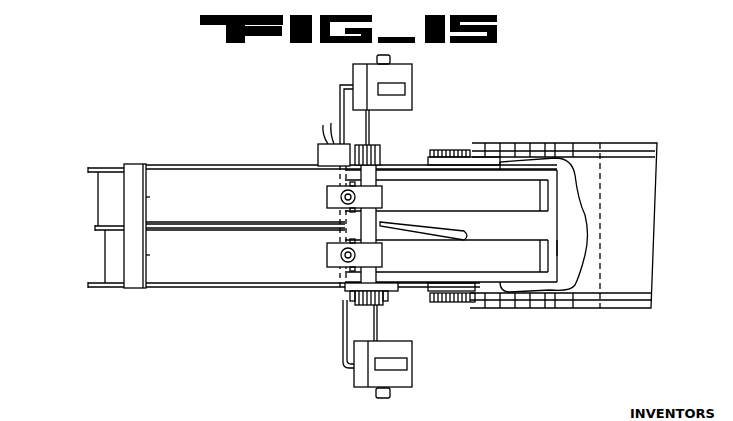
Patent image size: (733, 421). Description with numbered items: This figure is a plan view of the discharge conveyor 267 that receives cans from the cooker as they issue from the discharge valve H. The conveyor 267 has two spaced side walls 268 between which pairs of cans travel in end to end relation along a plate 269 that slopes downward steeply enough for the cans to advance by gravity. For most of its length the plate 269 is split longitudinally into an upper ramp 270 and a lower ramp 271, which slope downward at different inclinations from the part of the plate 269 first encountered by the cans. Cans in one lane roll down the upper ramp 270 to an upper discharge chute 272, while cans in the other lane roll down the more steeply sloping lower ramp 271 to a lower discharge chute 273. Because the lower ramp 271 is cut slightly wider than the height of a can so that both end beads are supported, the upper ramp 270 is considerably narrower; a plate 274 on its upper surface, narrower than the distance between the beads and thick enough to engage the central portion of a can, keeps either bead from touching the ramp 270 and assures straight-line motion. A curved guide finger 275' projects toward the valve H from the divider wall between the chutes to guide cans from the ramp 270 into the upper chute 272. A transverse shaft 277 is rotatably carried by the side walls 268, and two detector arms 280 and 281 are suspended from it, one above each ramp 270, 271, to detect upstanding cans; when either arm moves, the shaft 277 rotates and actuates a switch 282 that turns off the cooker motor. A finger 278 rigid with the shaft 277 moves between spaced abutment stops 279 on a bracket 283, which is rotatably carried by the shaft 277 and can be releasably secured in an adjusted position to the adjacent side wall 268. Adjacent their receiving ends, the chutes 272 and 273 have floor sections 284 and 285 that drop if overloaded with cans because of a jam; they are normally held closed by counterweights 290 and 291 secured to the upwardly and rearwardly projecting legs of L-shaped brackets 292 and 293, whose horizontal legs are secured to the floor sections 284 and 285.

The conveyor 267 is at (112, 290).
The side walls 268 is at (281, 165).
The plate 269 is at (557, 248).
The upper ramp 270 is at (462, 176).
The lower ramp 271 is at (457, 268).
The upper discharge chute 272 is at (180, 197).
The lower discharge chute 273 is at (172, 255).
The plate 274 is at (482, 203).
The curved guide finger 275' is at (383, 230).
The shaft 277 is at (370, 180).
The finger 278 is at (362, 303).
The abutment stops 279 is at (352, 295).
The detector arm 280 is at (343, 203).
The detector arm 281 is at (340, 255).
The switch 282 is at (333, 143).
The bracket 283 is at (375, 284).
The floor section 284 is at (271, 190).
The floor section 285 is at (247, 250).
The counterweight 290 is at (402, 68).
The counterweight 291 is at (362, 375).
The L-shaped bracket 292 is at (340, 100).
The L-shaped bracket 293 is at (357, 332).
The discharge valve H is at (635, 148).